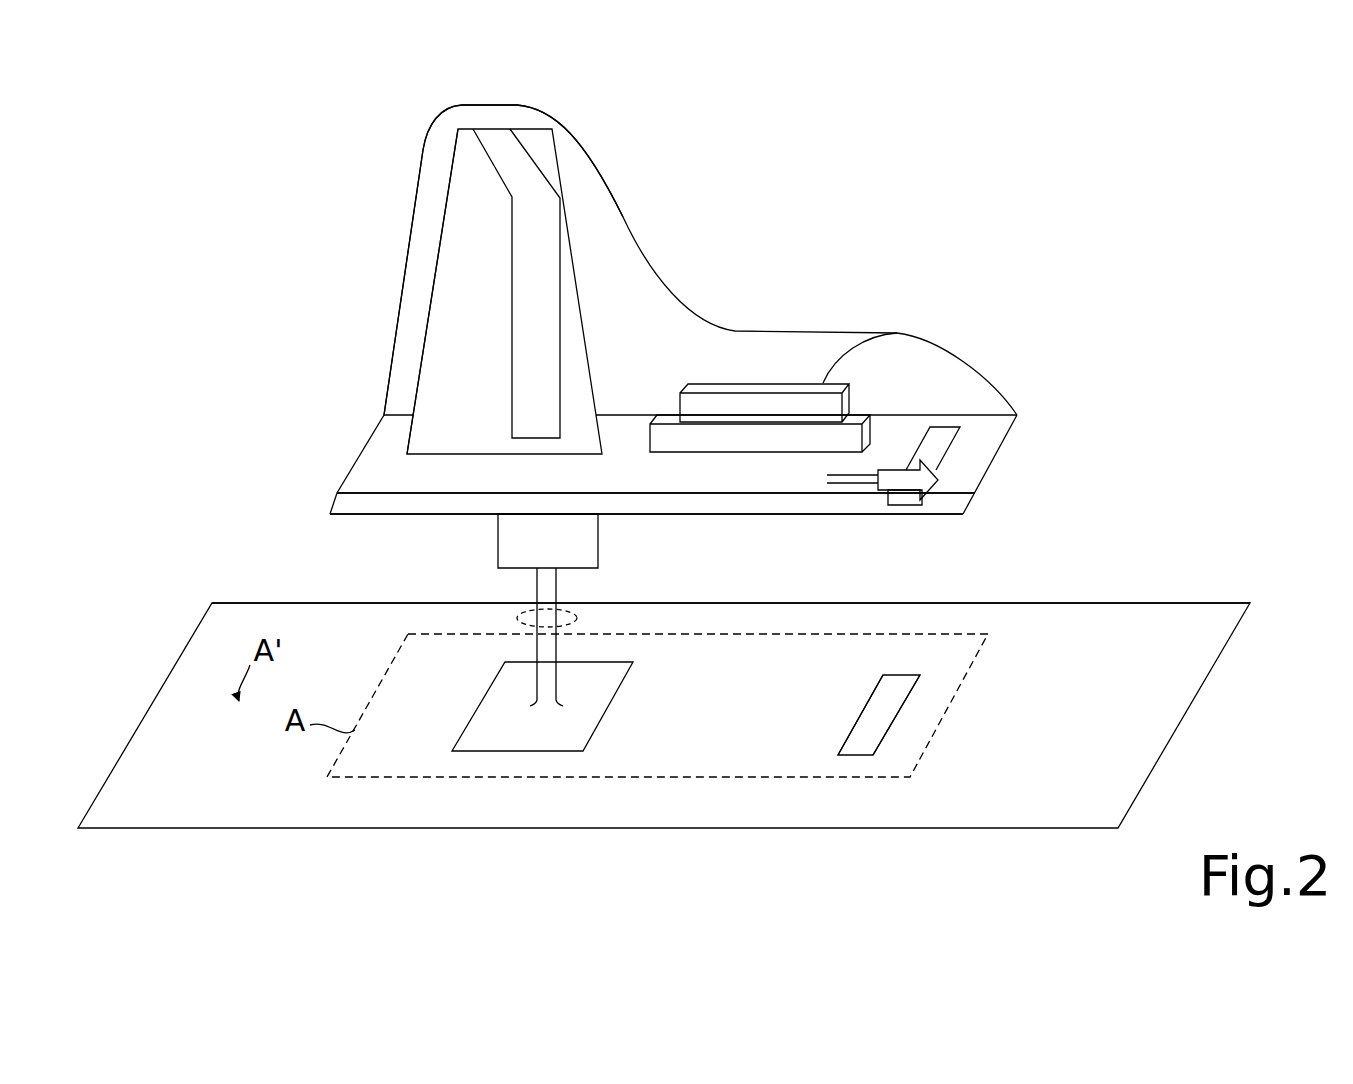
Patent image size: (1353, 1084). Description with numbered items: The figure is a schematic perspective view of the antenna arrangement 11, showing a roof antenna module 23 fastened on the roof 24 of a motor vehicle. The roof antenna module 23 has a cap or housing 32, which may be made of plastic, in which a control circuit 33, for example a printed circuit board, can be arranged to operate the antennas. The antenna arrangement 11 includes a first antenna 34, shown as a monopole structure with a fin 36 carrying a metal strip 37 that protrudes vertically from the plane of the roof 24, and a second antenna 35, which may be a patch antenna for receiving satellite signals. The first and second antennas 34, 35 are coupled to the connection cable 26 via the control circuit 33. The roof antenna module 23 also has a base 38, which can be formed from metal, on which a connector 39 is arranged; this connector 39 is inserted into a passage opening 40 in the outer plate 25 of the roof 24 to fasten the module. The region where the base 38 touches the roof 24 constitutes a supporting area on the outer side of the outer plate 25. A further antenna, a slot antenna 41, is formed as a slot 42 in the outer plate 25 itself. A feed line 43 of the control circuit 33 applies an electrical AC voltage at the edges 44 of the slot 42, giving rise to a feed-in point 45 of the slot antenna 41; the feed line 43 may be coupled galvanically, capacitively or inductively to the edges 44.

The antenna arrangement 11 is at (1046, 236).
The roof antenna module 23 is at (415, 197).
The roof 24 is at (1032, 691).
The outer plate 25 is at (1040, 603).
The connection cable 26 is at (530, 625).
The housing 32 is at (635, 228).
The control circuit 33 is at (383, 453).
The first antenna 34 is at (427, 320).
The second antenna 35 is at (880, 343).
The fin 36 is at (447, 232).
The metal strip 37 is at (525, 300).
The base 38 is at (735, 515).
The connector 39 is at (600, 538).
The passage opening 40 is at (570, 726).
The slot antenna 41 is at (907, 652).
The slot 42 is at (890, 740).
The feed line 43 is at (874, 463).
The edges 44 is at (855, 733).
The feed-in point 45 is at (935, 493).